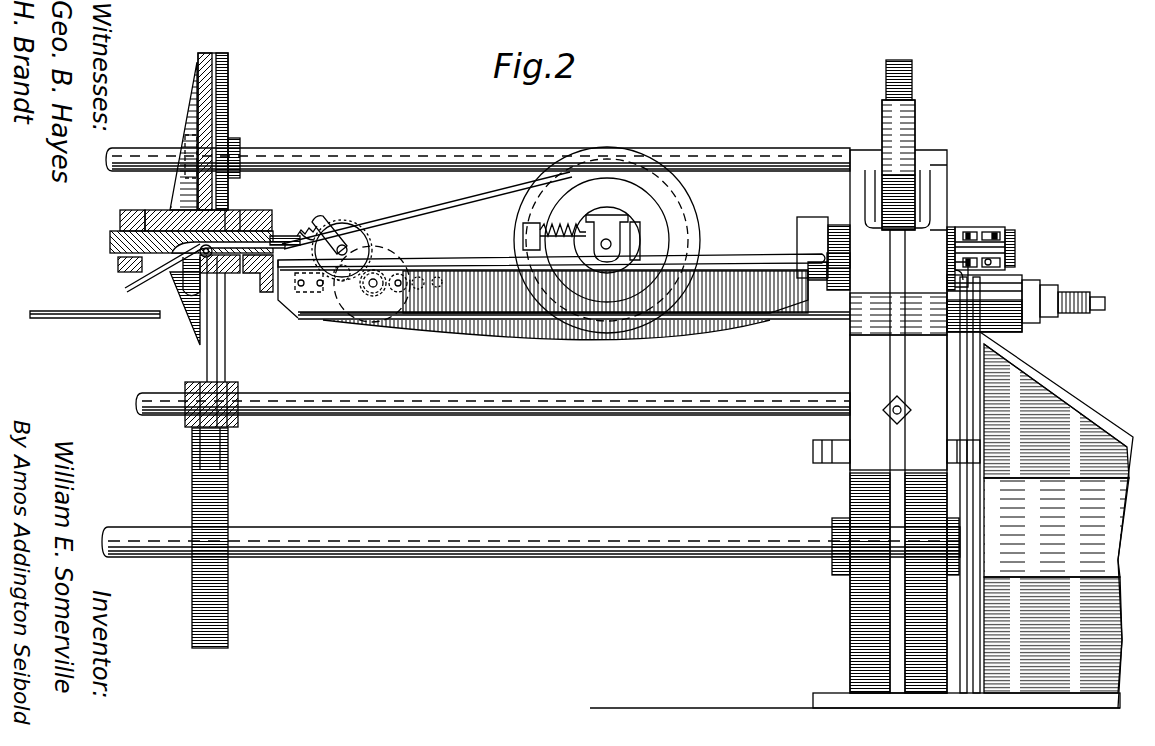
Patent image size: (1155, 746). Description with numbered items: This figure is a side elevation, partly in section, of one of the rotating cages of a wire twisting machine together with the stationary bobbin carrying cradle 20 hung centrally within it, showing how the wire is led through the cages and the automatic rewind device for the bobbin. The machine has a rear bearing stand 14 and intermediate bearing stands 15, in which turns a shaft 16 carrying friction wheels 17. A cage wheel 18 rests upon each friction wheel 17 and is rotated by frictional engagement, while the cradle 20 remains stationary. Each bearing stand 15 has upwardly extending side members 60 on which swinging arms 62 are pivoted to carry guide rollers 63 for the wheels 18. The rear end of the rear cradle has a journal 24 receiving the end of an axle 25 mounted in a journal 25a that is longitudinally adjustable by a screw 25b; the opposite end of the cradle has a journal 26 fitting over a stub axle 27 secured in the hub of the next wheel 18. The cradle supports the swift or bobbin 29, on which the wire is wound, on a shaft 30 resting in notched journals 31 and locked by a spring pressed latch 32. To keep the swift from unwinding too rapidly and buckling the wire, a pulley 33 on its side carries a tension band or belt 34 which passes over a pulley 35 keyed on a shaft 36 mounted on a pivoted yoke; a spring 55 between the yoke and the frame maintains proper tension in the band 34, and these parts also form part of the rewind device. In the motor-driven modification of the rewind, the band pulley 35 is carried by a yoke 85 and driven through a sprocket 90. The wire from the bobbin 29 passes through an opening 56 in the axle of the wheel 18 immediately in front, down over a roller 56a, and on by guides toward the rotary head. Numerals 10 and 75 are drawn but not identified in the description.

The bracket 10 is at (228, 78).
The rear bearing stand 14 is at (1046, 492).
The intermediate bearing stand 15 is at (848, 625).
The shaft 16 is at (405, 560).
The friction wheel 17 is at (242, 590).
The wheel 18 is at (912, 95).
The cradle 20 is at (693, 338).
The journal 24 is at (805, 228).
The axle 25 is at (1013, 242).
The journal 25a is at (992, 227).
The screw 25b is at (1085, 282).
The journal 26 is at (270, 215).
The stub axle 27 is at (147, 212).
The swift or bobbin 29 is at (672, 192).
The shaft 30 is at (607, 242).
The notched journal 31 is at (618, 243).
The spring pressed latch 32 is at (520, 232).
The pulley 33 is at (618, 190).
The tension band or belt 34 is at (495, 186).
The pulley 35 is at (380, 243).
The shaft 36 is at (362, 228).
The spring 55 is at (299, 222).
The opening 56 is at (243, 274).
The roller 56a is at (210, 278).
The side member 60 is at (896, 402).
The swinging arm 62 is at (947, 172).
The guide roller 63 is at (912, 137).
The rod 75 is at (120, 320).
The yoke 85 is at (334, 226).
The sprocket 90 is at (352, 330).